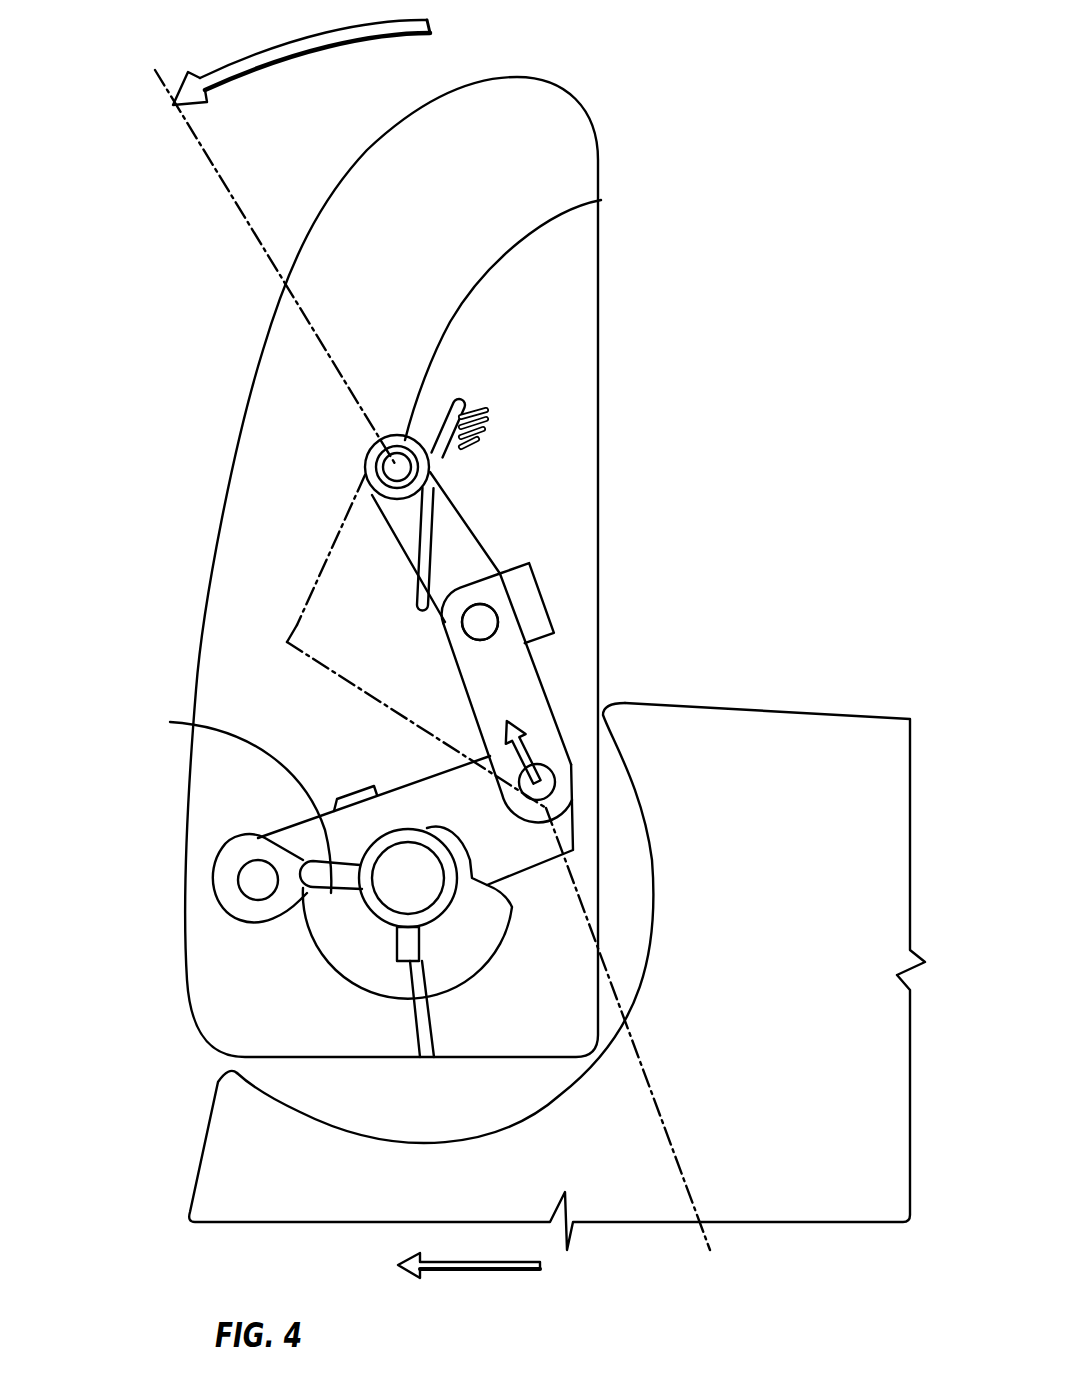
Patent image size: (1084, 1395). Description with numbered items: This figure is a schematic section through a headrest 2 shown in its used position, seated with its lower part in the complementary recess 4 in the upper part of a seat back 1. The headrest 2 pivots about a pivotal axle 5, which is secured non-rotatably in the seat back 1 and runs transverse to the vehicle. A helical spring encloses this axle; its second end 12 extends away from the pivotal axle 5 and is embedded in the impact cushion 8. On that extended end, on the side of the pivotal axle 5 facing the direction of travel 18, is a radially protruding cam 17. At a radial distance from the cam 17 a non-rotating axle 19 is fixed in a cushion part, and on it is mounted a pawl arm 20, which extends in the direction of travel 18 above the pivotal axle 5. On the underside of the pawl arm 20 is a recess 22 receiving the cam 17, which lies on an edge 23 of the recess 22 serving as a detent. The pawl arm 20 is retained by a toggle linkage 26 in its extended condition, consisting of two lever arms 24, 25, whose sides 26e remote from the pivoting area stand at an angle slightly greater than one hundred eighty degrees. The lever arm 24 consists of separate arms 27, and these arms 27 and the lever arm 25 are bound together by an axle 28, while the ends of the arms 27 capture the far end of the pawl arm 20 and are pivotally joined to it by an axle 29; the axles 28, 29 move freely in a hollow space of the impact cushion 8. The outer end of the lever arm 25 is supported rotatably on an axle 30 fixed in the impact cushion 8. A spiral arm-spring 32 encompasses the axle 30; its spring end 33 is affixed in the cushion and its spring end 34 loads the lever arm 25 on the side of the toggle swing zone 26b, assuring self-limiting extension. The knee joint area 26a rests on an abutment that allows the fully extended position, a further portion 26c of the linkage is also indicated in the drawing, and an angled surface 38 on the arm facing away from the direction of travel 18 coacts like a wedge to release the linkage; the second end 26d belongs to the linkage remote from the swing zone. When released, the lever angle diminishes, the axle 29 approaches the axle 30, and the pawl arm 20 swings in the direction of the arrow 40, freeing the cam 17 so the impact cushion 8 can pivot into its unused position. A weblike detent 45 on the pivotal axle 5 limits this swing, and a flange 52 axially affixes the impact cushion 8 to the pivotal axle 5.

The seat back 1 is at (827, 710).
The headrest 2 is at (525, 108).
The recess 4 is at (603, 708).
The pivotal axle 5 is at (335, 886).
The impact cushion 8 is at (523, 317).
The second end of the helical spring 12 is at (426, 1022).
The cam 17 is at (400, 879).
The direction of vehicle travel 18 is at (487, 1270).
The axle 19 is at (258, 880).
The pawl arm 20 is at (305, 826).
The recess 22 is at (303, 853).
The edge 23 is at (234, 800).
The lever arm 24 is at (517, 687).
The lever arm 25 is at (465, 545).
The toggle linkage 26 is at (425, 628).
The knee joint area 26a is at (298, 632).
The toggle swing zone 26b is at (365, 477).
The pawl arm contour 26c is at (601, 200).
The second end of the toggle linkage 26d is at (548, 812).
The side of the lever arms 26e is at (537, 553).
The lever body 27 is at (480, 675).
The axle 28 is at (478, 622).
The axle 29 is at (545, 780).
The axle 30 is at (397, 467).
The spiral arm-spring 32 is at (397, 467).
The spring end 33 is at (450, 448).
The spring end 34 is at (425, 543).
The angled surface 38 is at (535, 610).
The arrow 40 is at (552, 731).
The detent 45 is at (398, 952).
The flange 52 is at (435, 912).